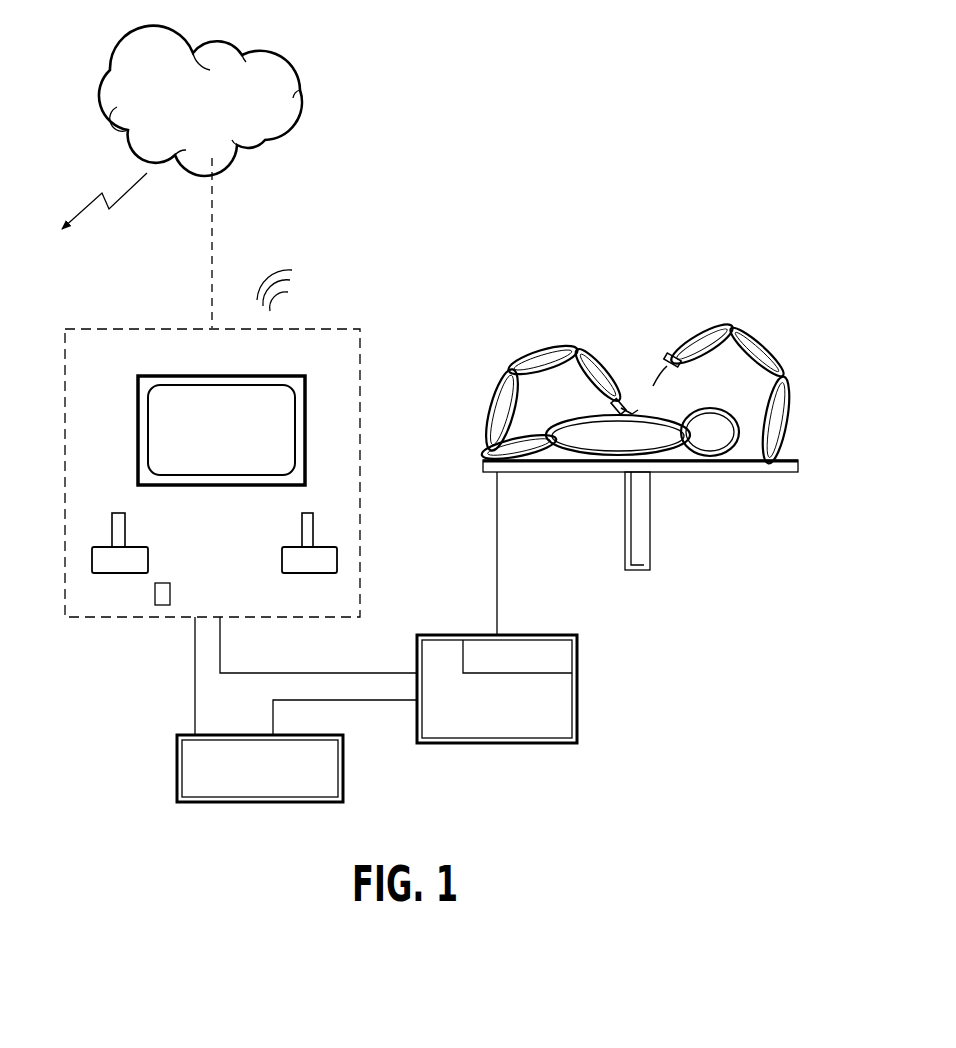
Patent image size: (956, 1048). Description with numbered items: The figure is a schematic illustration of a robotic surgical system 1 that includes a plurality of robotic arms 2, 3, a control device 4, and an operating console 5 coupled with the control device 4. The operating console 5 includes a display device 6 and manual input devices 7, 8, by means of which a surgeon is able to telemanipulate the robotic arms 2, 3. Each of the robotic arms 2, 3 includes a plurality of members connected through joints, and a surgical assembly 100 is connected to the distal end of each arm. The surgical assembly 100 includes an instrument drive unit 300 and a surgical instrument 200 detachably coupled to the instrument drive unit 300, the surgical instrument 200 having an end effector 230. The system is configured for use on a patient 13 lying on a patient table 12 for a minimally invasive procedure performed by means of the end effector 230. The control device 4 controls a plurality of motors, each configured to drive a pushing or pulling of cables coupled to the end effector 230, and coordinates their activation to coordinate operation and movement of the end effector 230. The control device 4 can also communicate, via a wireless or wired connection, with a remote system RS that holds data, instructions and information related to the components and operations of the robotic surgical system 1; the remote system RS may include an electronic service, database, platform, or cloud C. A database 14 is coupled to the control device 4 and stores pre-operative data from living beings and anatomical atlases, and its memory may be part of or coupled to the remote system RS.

The robotic surgical system 1 is at (707, 670).
The robotic arm 2 is at (500, 340).
The robotic arm 3 is at (760, 347).
The control device 4 is at (497, 689).
The operating console 5 is at (150, 294).
The display device 6 is at (221, 430).
The manual input device 7 is at (105, 563).
The manual input device 8 is at (308, 563).
The patient table 12 is at (573, 472).
The patient 13 is at (654, 441).
The database 14 is at (260, 768).
The surgical assembly 100 is at (610, 400).
The surgical instrument 200 is at (625, 404).
The end effector 230 is at (650, 401).
The instrument drive unit 300 is at (617, 396).
The cloud C is at (270, 75).
The remote system RS is at (278, 257).